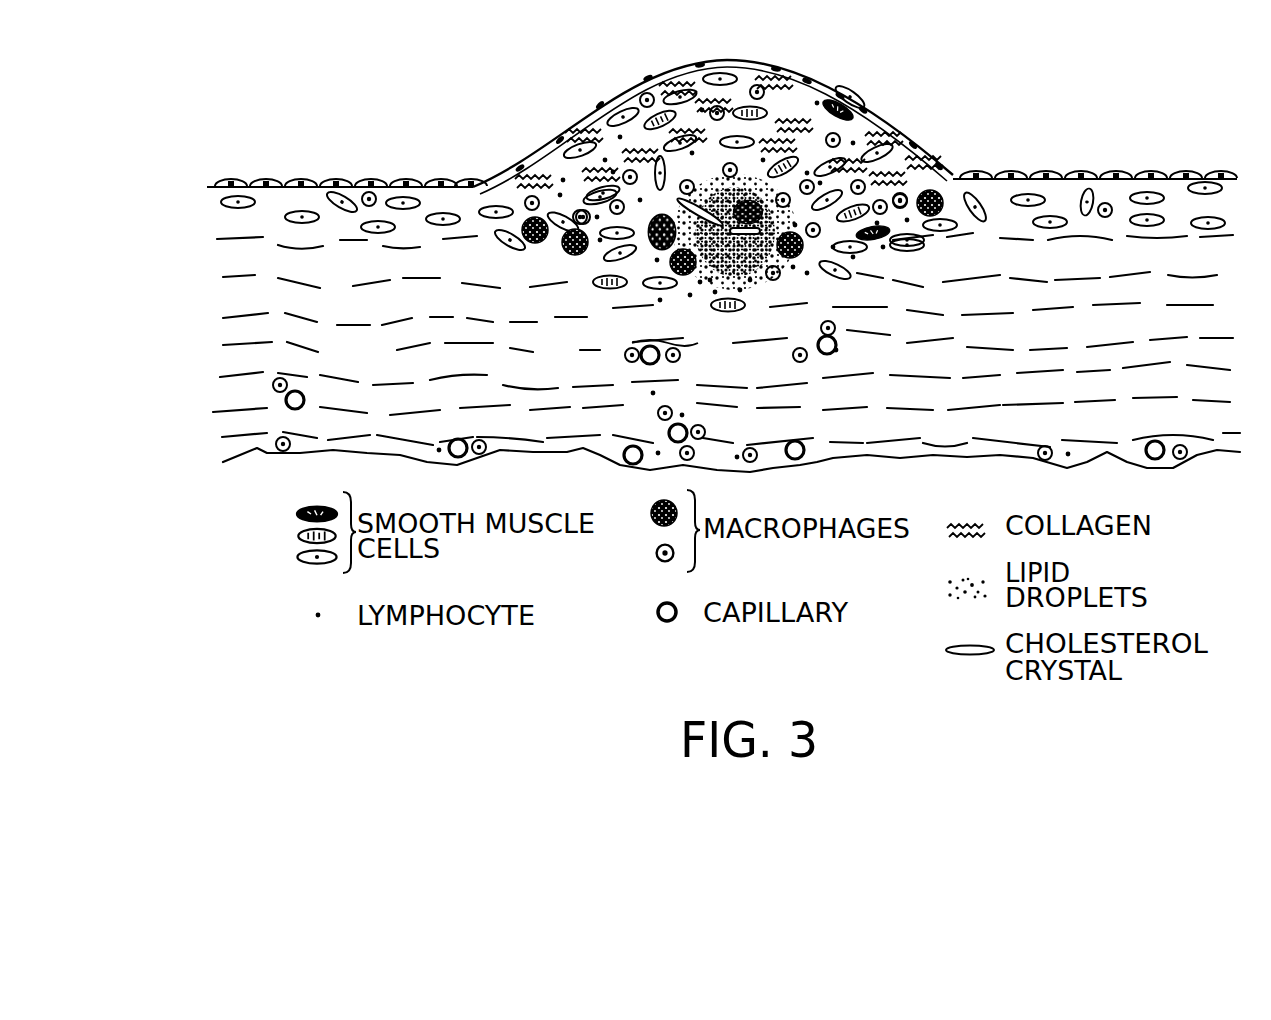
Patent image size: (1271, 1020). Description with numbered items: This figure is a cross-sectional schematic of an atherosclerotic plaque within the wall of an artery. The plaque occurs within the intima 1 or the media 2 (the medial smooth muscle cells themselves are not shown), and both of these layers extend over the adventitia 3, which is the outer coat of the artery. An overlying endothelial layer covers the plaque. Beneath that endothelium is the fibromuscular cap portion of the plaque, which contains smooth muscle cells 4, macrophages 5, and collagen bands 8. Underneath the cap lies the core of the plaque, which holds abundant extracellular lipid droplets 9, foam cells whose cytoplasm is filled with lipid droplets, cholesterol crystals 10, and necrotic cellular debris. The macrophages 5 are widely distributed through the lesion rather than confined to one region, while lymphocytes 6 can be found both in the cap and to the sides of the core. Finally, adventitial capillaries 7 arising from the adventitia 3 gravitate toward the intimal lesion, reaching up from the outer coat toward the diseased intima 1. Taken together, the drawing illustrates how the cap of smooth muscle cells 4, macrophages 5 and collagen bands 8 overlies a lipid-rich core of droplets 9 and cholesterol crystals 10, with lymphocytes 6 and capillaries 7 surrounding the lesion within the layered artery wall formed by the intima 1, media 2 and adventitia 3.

The intima 1 is at (193, 182).
The media 2 is at (193, 245).
The adventitia 3 is at (193, 438).
The smooth muscle cells 4 is at (343, 200).
The macrophages 5 is at (536, 224).
The lymphocytes 6 is at (620, 137).
The adventitial capillaries 7 is at (835, 342).
The collagen bands 8 is at (572, 170).
The extracellular lipid droplets 9 is at (750, 286).
The cholesterol crystals 10 is at (697, 286).